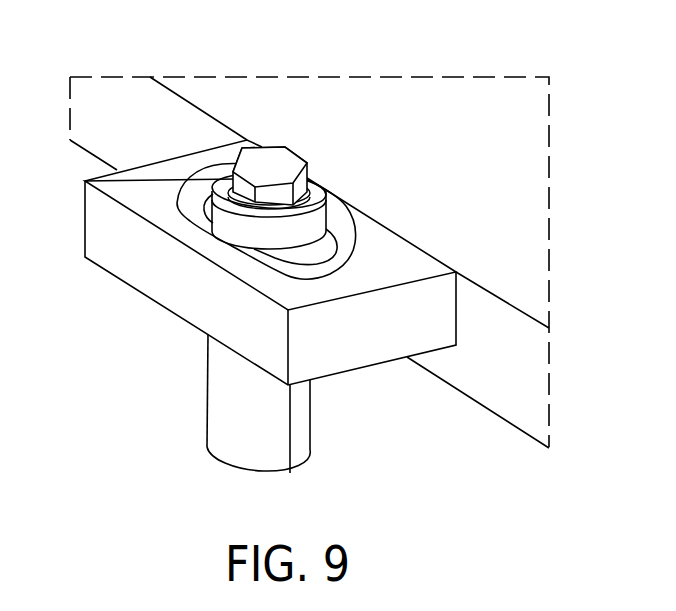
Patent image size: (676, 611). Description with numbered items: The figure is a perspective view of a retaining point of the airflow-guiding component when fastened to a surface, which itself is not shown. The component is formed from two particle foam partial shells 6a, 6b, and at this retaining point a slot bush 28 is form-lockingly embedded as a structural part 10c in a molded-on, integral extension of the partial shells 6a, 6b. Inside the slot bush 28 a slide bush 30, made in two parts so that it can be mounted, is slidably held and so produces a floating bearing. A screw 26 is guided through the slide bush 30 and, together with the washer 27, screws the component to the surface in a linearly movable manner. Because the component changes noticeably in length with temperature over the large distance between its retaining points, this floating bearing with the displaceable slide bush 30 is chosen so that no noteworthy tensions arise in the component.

The partial shell 6a is at (91, 192).
The partial shell 6b is at (525, 105).
The structural part 10c is at (327, 404).
The screw 26 is at (267, 176).
The washer 27 is at (307, 182).
The slot bush 28 is at (327, 404).
The slide bush 30 is at (225, 228).